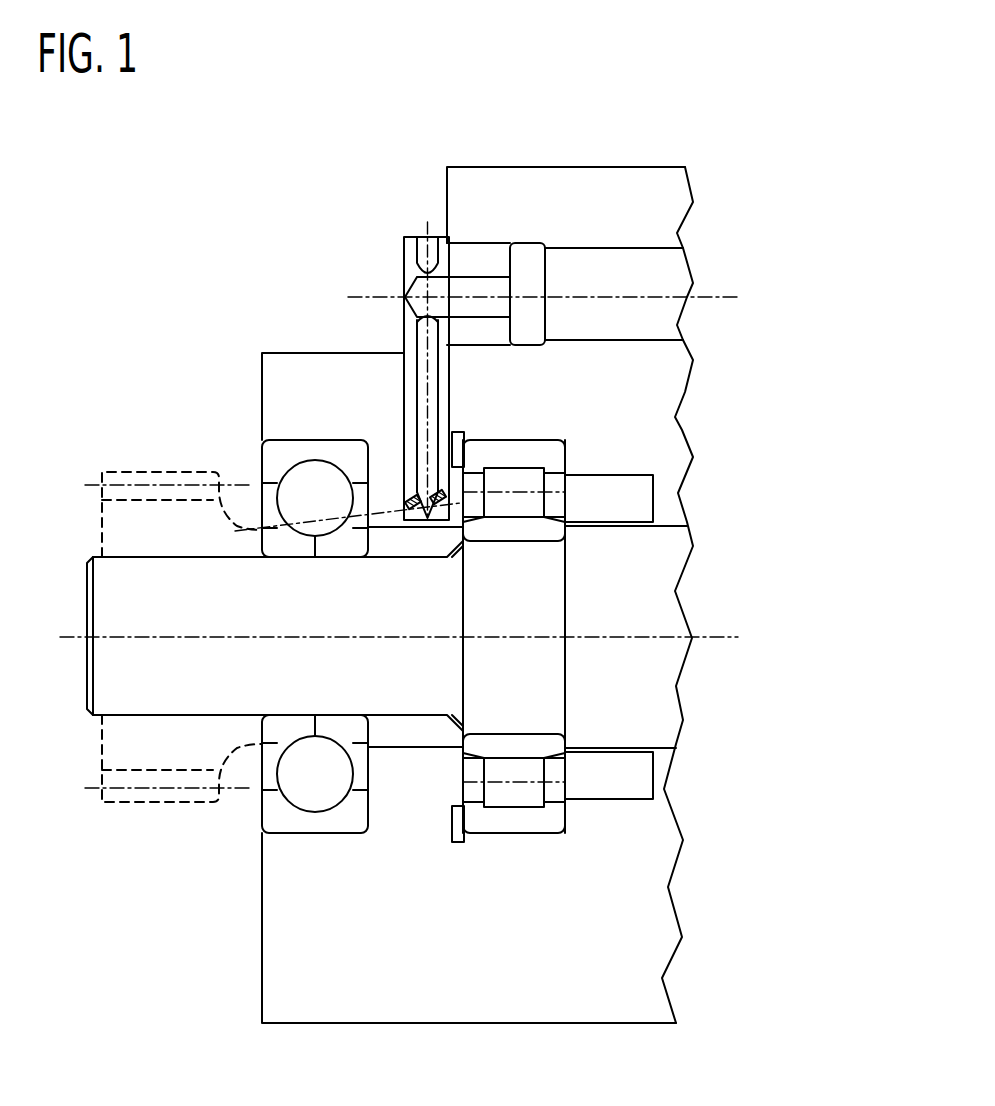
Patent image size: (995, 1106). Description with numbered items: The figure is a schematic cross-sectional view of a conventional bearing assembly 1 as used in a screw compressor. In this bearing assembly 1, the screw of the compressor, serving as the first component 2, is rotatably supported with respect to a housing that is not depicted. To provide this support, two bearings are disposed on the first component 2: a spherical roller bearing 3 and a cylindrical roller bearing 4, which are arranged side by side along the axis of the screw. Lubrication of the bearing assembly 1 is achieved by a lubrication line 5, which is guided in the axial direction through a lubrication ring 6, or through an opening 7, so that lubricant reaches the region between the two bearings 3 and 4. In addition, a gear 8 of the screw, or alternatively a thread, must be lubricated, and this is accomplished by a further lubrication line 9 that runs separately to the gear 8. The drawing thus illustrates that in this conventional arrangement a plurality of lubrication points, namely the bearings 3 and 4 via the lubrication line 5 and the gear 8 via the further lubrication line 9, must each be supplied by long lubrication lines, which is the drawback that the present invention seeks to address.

The bearing assembly 1 is at (415, 158).
The first component 2 is at (103, 673).
The spherical roller bearing 3 is at (272, 812).
The cylindrical roller bearing 4 is at (517, 822).
The lubrication line 5 is at (427, 389).
The lubrication ring 6 is at (272, 460).
The opening 7 is at (385, 450).
The gear 8 is at (152, 483).
The further lubrication line 9 is at (175, 242).